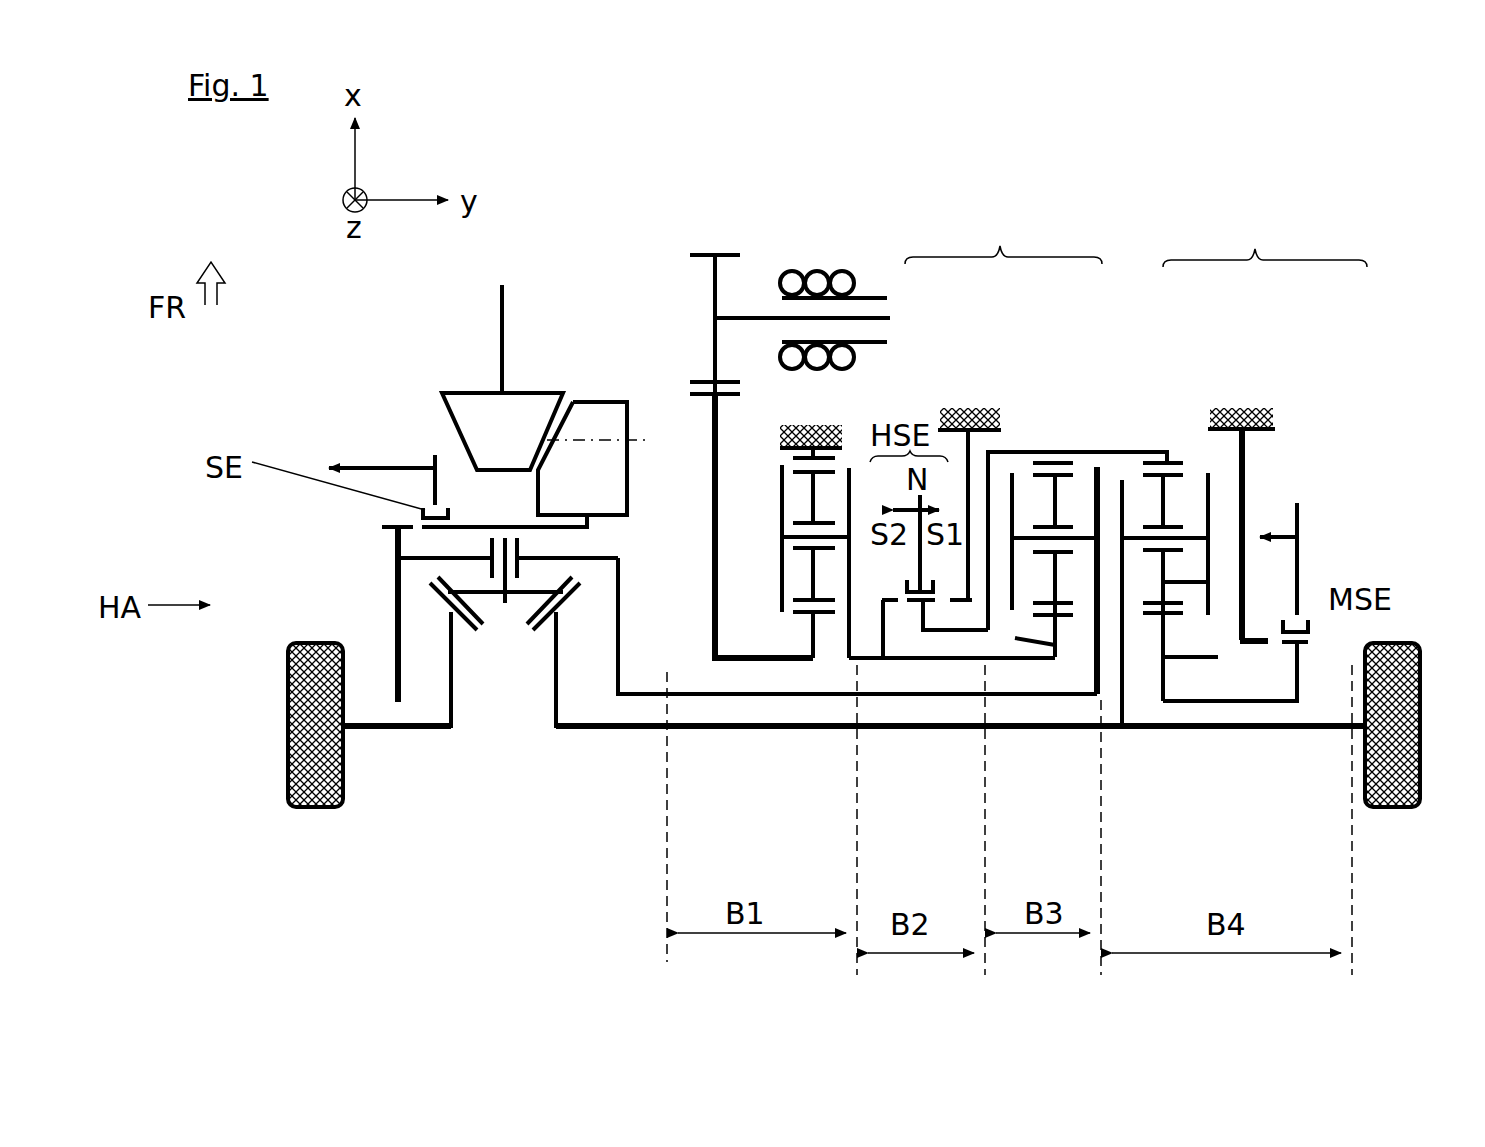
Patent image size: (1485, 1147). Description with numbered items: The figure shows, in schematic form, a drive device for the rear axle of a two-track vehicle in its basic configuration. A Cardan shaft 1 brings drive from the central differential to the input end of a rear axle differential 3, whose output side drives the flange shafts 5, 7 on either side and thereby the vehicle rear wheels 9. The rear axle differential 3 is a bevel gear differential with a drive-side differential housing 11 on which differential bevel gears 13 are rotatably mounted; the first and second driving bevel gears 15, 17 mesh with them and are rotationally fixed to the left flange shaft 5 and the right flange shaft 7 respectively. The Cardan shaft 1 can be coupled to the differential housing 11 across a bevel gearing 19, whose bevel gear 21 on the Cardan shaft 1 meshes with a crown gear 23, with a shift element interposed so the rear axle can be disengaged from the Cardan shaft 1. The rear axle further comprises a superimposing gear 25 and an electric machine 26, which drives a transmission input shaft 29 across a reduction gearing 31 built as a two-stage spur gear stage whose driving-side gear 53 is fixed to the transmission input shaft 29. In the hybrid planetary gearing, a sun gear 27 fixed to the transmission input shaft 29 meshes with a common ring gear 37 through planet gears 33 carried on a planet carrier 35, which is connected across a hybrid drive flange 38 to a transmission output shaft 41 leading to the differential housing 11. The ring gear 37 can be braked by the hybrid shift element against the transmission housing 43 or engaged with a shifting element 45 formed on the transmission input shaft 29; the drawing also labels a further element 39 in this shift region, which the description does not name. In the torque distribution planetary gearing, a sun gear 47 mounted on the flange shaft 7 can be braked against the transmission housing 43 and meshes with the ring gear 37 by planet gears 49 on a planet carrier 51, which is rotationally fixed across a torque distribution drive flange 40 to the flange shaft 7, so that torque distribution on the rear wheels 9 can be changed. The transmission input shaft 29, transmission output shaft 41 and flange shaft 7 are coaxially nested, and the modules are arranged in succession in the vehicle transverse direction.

The Cardan shaft 1 is at (500, 325).
The rear axle differential 3 is at (392, 600).
The flange shaft 5 is at (373, 729).
The flange shaft 7 is at (581, 729).
The vehicle rear wheels 9 is at (292, 648).
The differential housing 11 is at (620, 557).
The differential bevel gear 13 is at (505, 603).
The first driving bevel gear 15 is at (452, 728).
The second driving bevel gear 17 is at (553, 728).
The bevel gearing 19 is at (638, 333).
The bevel gear 21 is at (542, 393).
The crown gear 23 is at (602, 402).
The superimposing gear 25 is at (1263, 203).
The electric machine 26 is at (786, 269).
The sun gear 27 is at (1015, 638).
The transmission input shaft 29 is at (736, 648).
The reduction gearing 31 is at (726, 421).
The planet gears 33 is at (1053, 461).
The planet carrier 35 is at (1011, 474).
The ring gear 37 is at (1073, 451).
The hybrid drive flange 38 is at (1097, 647).
The shifting sleeve 39 is at (990, 548).
The torque distribution drive flange 40 is at (1124, 697).
The transmission output shaft 41 is at (622, 690).
The transmission housing 43 is at (955, 410).
The shifting element 45 is at (881, 620).
The sun gear 47 is at (1245, 572).
The planet gears 49 is at (1218, 655).
The planet carrier 51 is at (1190, 536).
The driving-side gear 53 is at (712, 590).